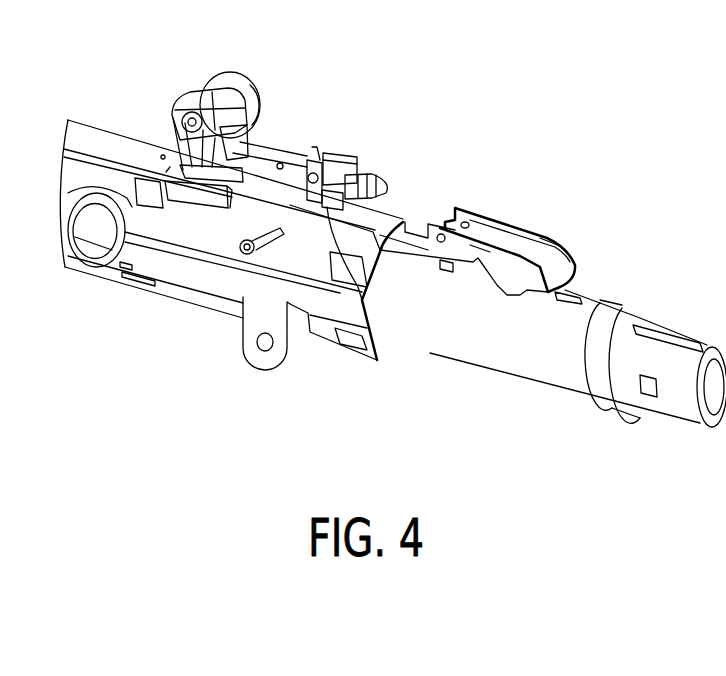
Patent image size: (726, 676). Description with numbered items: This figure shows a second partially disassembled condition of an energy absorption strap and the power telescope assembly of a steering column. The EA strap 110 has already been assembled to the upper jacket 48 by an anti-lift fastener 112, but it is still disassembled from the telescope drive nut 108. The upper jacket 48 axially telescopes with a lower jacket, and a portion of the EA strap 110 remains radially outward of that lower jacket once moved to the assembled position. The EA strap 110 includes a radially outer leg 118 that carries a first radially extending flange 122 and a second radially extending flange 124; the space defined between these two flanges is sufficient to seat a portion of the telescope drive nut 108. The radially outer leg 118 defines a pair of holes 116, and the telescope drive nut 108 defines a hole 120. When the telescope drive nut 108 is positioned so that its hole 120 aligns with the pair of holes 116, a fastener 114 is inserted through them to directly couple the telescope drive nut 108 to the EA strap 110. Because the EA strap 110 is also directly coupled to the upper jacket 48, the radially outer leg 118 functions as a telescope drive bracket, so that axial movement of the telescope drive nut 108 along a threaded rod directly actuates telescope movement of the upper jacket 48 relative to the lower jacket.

The upper jacket 48 is at (460, 342).
The telescope drive nut 108 is at (365, 157).
The EA strap 110 is at (568, 267).
The anti-lift fastener 112 is at (548, 293).
The fastener 114 is at (257, 250).
The pair of holes 116 is at (465, 221).
The radially outer leg 118 is at (523, 247).
The hole 120 is at (370, 300).
The first radially extending flange 122 is at (480, 245).
The second radially extending flange 124 is at (545, 243).